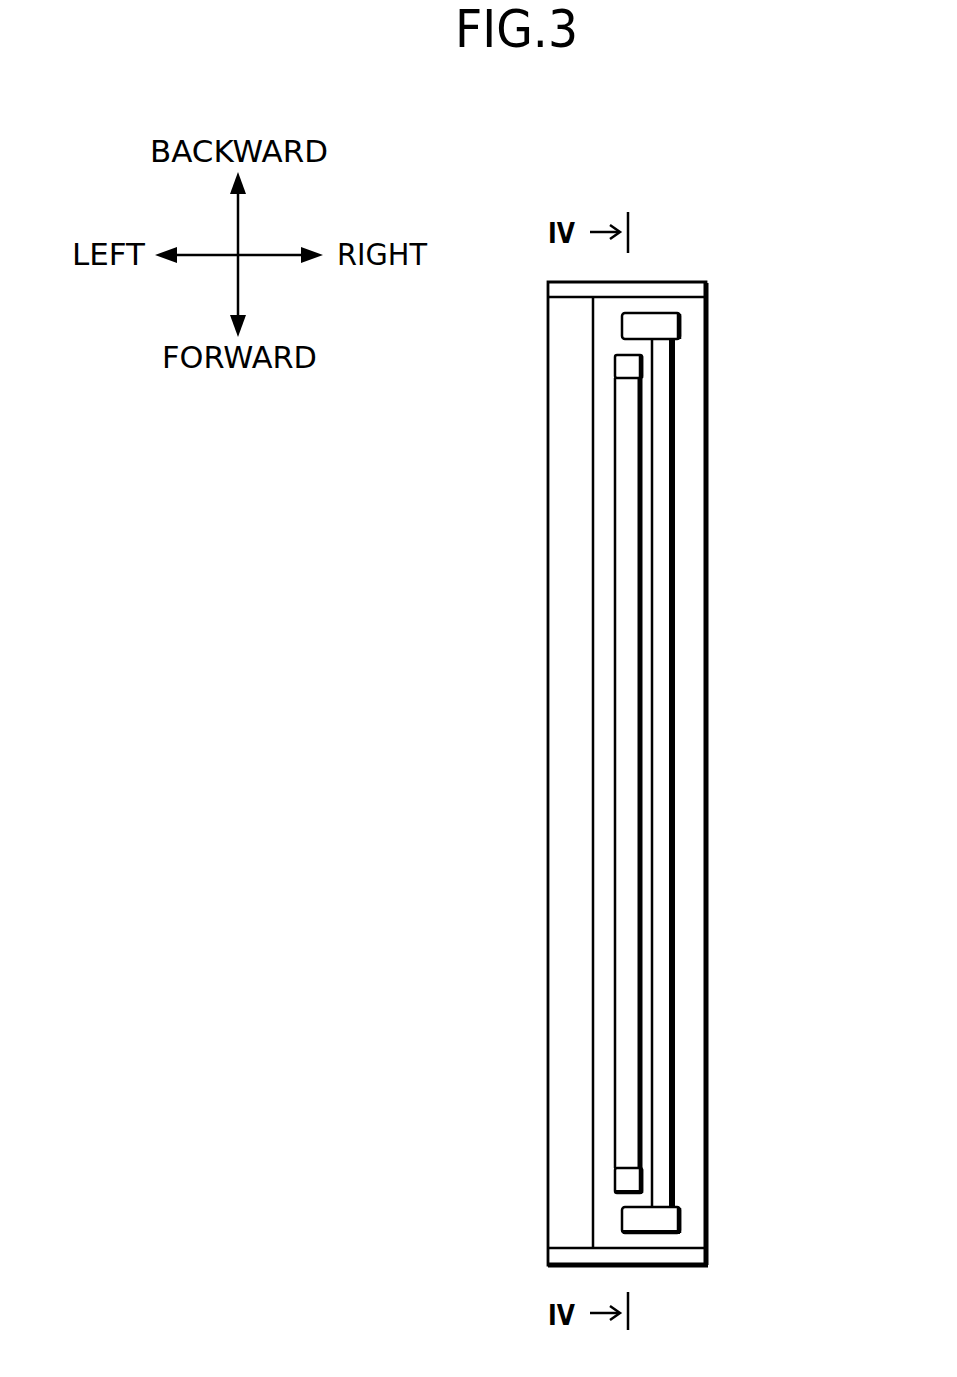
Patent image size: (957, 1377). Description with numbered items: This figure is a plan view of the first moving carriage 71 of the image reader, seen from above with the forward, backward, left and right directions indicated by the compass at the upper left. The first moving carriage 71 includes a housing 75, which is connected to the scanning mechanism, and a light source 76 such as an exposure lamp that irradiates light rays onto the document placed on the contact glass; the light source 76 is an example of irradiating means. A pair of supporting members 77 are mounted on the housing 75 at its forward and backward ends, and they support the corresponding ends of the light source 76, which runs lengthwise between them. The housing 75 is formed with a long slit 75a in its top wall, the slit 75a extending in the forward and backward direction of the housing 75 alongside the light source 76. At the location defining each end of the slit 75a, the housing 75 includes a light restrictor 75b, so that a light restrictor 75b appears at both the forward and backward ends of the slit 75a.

The first moving carriage 71 is at (722, 259).
The housing 75 is at (667, 282).
The slit 75a is at (627, 723).
The light restrictor 75b is at (627, 372).
The light source 76 is at (665, 648).
The supporting members 77 is at (672, 327).